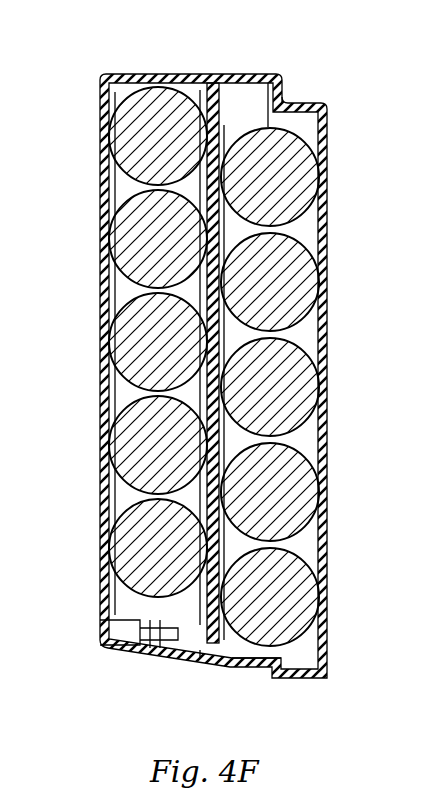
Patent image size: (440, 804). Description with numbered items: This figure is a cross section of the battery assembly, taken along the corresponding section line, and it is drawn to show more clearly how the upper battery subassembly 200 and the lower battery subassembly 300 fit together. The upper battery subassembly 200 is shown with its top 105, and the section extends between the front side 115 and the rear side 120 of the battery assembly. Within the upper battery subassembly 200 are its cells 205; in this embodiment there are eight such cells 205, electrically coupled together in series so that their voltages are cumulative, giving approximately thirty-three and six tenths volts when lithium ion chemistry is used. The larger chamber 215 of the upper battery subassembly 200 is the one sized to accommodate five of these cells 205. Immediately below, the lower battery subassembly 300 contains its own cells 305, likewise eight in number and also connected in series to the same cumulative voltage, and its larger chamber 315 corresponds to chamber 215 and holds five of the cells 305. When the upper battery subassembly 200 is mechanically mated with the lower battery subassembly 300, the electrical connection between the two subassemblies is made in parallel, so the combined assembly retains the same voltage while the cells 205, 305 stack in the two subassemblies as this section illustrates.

The top 105 is at (100, 278).
The front side 115 is at (256, 668).
The rear side 120 is at (246, 74).
The upper battery subassembly 200 is at (100, 622).
The cells 205 is at (104, 131).
The chamber 215 is at (118, 388).
The lower battery subassembly 300 is at (330, 345).
The cells 305 is at (320, 143).
The chamber 315 is at (293, 110).